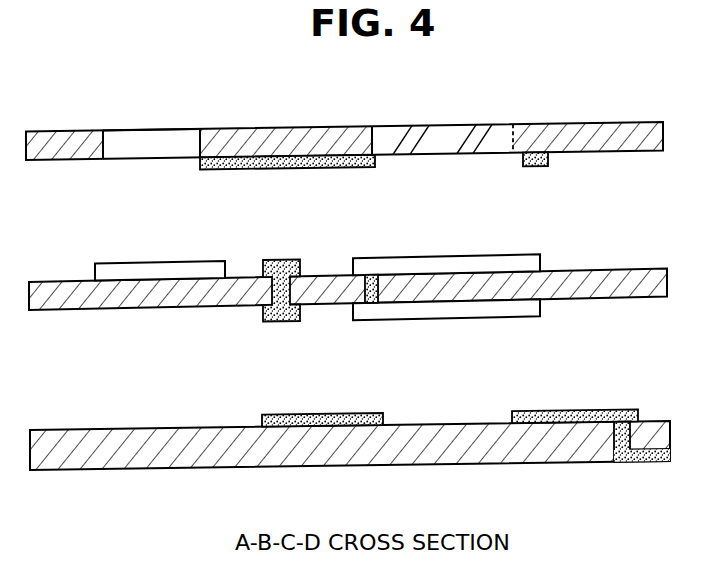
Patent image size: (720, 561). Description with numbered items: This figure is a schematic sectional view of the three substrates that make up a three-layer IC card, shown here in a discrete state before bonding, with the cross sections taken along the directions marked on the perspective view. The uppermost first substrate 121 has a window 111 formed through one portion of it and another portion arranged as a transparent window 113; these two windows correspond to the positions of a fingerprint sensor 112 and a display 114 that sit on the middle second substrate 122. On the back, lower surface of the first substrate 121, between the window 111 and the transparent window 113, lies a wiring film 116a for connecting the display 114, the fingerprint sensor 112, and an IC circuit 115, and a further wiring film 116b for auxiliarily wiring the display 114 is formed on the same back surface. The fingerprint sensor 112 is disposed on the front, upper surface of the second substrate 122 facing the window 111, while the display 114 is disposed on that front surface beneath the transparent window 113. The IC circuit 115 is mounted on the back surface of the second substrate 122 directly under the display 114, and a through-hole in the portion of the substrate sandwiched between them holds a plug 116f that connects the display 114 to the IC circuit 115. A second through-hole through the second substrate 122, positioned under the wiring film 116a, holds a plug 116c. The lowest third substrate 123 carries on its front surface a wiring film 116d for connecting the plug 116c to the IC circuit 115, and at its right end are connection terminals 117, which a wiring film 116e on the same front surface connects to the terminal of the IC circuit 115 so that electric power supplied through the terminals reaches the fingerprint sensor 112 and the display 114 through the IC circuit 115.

The window 111 is at (118, 133).
The fingerprint sensor 112 is at (123, 262).
The transparent window 113 is at (452, 122).
The display 114 is at (492, 255).
The IC circuit 115 is at (492, 318).
The wiring film 116a is at (277, 172).
The wiring film 116b is at (540, 167).
The plug 116c is at (285, 260).
The wiring film 116d is at (288, 412).
The wiring film 116e is at (588, 410).
The plug 116f is at (372, 278).
The connection terminals 117 is at (640, 462).
The first substrate 121 is at (573, 122).
The second substrate 122 is at (580, 269).
The third substrate 123 is at (513, 463).